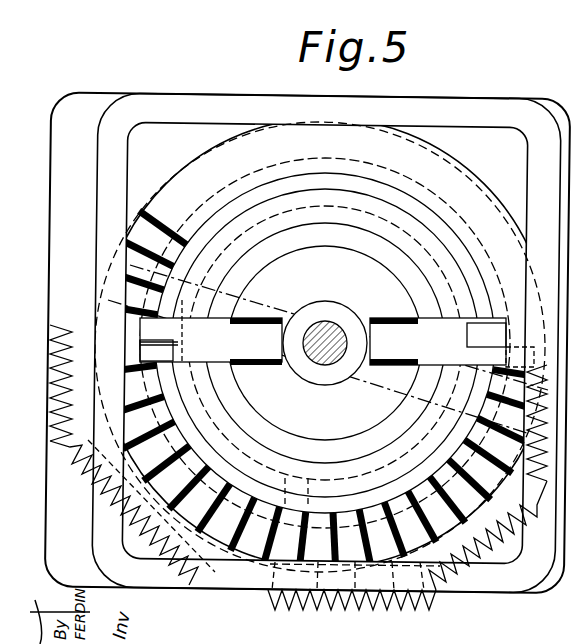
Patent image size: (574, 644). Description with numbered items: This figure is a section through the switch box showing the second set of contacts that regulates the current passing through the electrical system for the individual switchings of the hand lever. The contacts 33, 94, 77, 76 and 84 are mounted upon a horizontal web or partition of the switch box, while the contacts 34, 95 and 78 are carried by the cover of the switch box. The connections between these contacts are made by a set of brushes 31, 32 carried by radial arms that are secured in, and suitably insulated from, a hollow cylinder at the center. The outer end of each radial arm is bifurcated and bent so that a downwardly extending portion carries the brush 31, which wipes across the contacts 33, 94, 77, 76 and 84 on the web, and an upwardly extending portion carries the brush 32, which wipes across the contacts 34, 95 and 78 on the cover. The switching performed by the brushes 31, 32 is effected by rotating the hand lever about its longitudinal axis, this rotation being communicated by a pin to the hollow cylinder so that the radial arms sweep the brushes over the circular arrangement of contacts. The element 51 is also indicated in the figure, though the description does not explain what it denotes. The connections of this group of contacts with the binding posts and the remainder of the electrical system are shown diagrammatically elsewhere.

The brush 31 is at (140, 343).
The brush 32 is at (166, 349).
The contact 33 is at (325, 331).
The contact 34 is at (325, 339).
The stop 51 is at (507, 352).
The contact 76 is at (132, 442).
The contact 77 is at (506, 478).
The contact 78 is at (320, 356).
The contact 84 is at (135, 266).
The contact 94 is at (331, 380).
The contact 95 is at (500, 377).